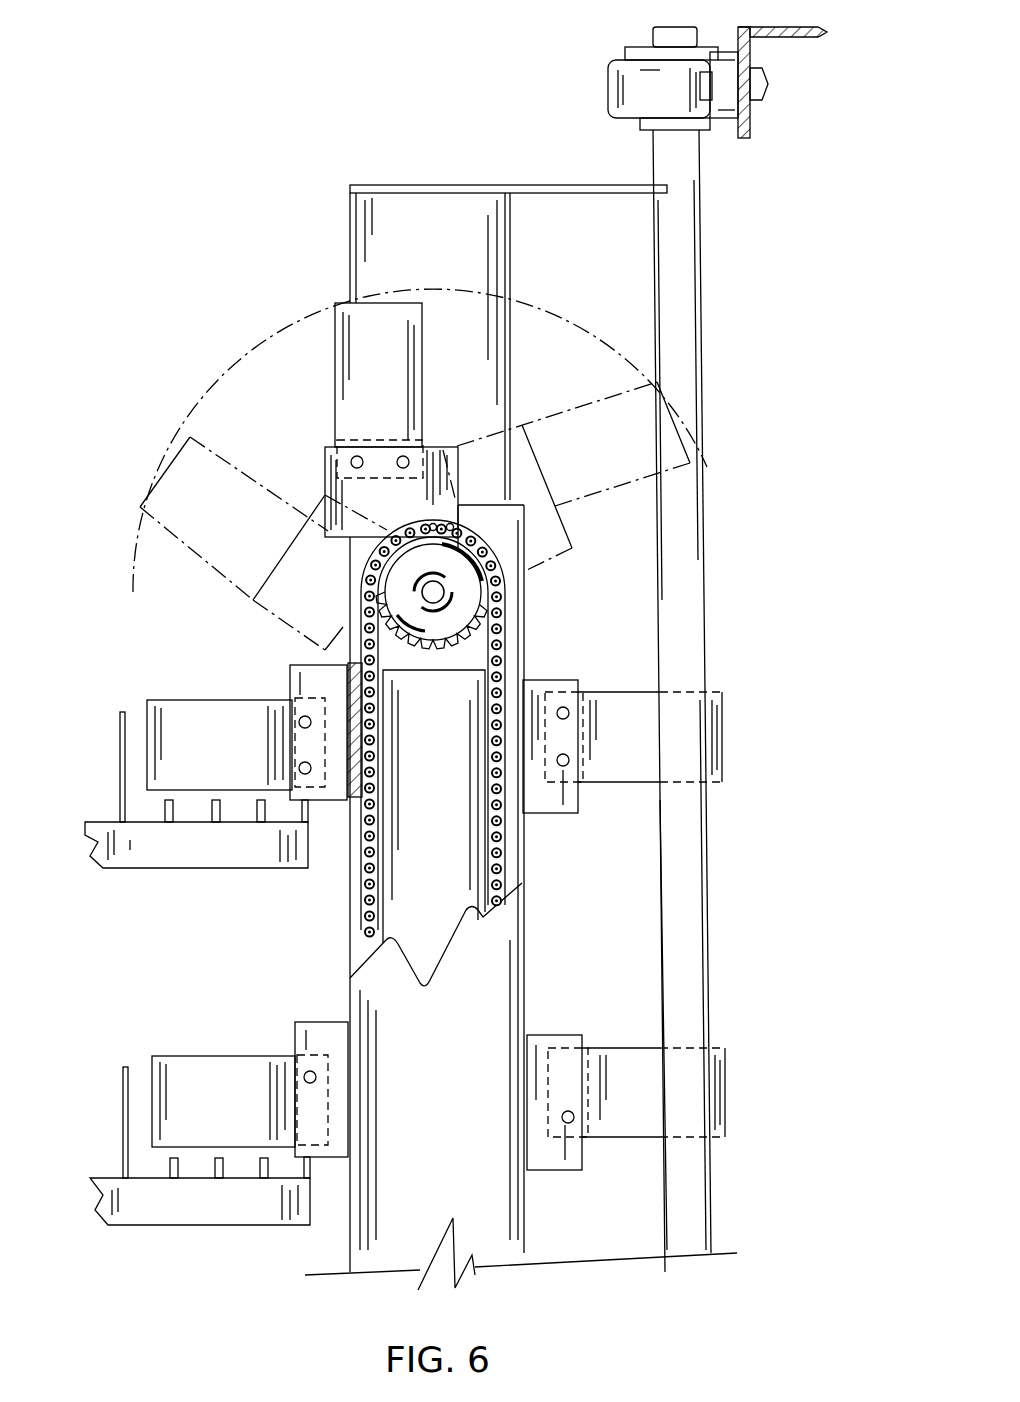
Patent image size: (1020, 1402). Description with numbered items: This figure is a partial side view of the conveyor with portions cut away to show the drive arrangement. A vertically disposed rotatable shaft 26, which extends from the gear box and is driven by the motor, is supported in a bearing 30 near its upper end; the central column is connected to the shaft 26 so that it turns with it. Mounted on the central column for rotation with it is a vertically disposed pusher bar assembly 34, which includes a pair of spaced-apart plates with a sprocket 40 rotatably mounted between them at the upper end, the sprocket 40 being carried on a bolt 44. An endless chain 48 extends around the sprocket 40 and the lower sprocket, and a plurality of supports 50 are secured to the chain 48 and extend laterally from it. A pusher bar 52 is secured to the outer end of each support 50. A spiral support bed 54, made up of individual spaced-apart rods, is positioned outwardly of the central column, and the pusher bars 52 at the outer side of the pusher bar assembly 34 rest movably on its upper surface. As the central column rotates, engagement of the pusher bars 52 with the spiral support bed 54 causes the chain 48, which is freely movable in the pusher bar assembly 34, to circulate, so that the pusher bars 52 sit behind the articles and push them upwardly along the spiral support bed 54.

The rotatable shaft 26 is at (675, 322).
The bearing 30 is at (657, 80).
The pusher bar assembly 34 is at (478, 1015).
The sprocket 40 is at (468, 600).
The bolt 44 is at (432, 583).
The endless chain 48 is at (523, 660).
The support 50 is at (555, 680).
The pusher bar 52 is at (362, 368).
The spiral support bed 54 is at (262, 855).